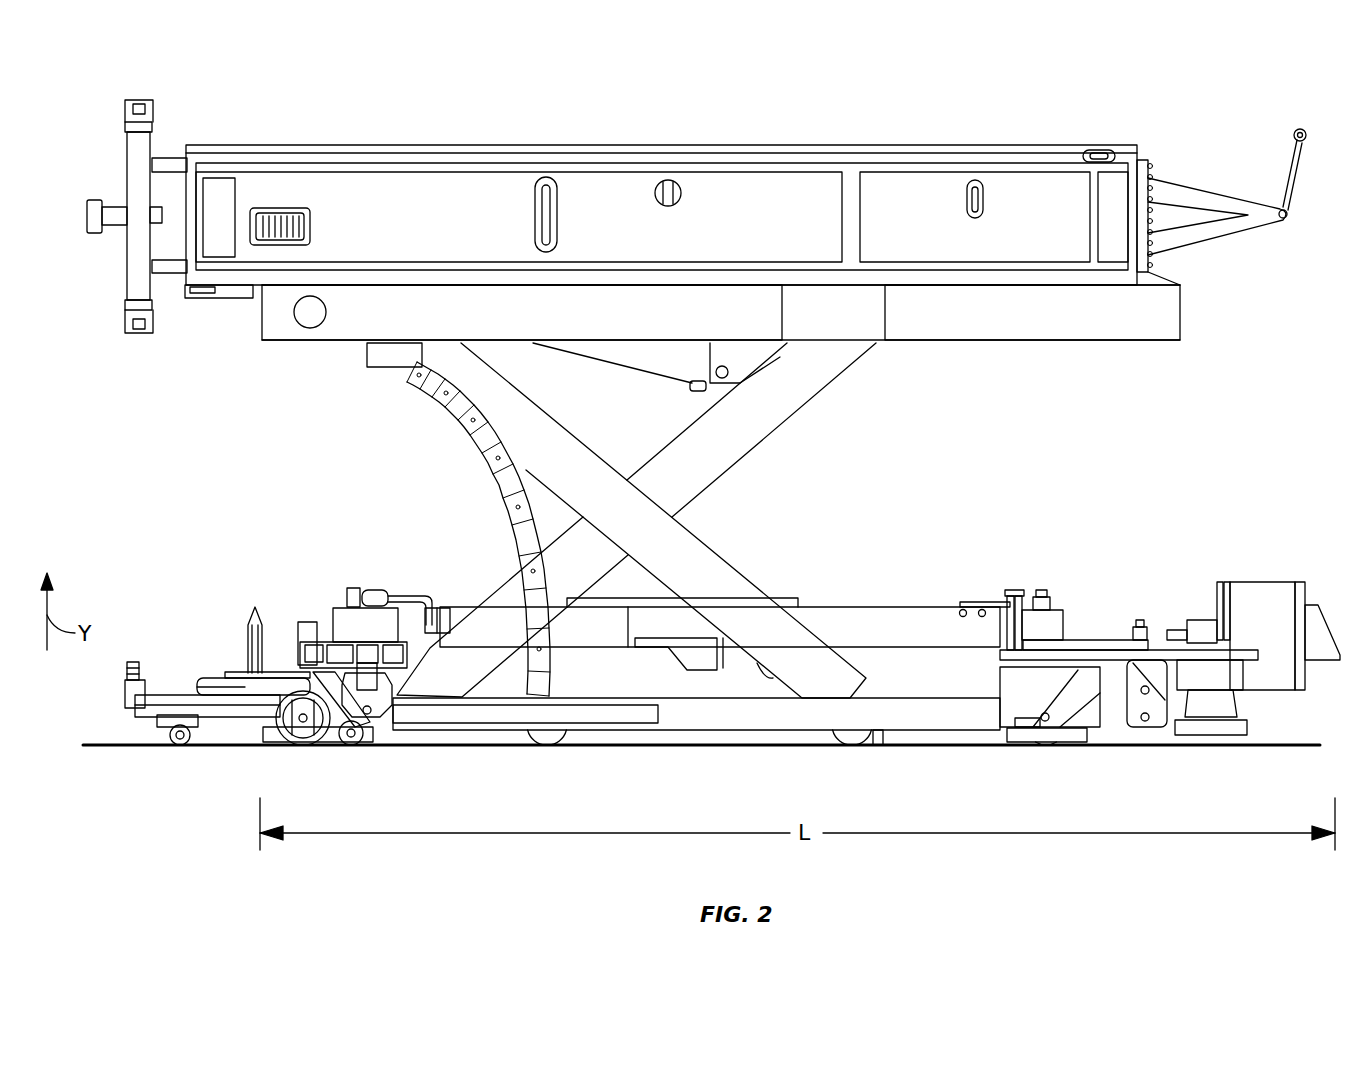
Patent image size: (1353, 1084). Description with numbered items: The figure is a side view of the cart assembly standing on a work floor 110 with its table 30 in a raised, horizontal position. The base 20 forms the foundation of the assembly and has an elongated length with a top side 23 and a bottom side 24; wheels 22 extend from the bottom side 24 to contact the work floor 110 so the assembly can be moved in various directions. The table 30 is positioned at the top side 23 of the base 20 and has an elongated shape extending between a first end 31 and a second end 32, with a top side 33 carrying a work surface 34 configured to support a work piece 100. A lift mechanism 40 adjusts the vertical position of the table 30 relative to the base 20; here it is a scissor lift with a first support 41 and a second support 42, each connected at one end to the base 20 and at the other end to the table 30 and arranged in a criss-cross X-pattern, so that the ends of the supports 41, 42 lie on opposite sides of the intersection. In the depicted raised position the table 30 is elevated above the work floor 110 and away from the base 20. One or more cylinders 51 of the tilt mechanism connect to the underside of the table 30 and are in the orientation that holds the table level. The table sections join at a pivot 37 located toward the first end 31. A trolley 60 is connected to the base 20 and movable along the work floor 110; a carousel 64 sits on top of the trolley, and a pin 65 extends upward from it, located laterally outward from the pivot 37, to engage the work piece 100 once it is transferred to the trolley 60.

The work piece 100 is at (885, 197).
The base 20 is at (950, 673).
The wheels 22 is at (533, 738).
The top side 23 is at (913, 603).
The bottom side 24 is at (903, 728).
The table 30 is at (716, 335).
The first end 31 is at (262, 318).
The second end 32 is at (1182, 308).
The top side 33 is at (1172, 283).
The work surface 34 is at (1158, 283).
The pivot 37 is at (310, 312).
The lift mechanism 40 is at (627, 520).
The first support 41 is at (720, 440).
The second support 42 is at (537, 445).
The cylinders 51 is at (642, 353).
The trolley 60 is at (197, 685).
The carousel 64 is at (242, 690).
The pins 65 is at (255, 627).
The work floor 110 is at (120, 745).